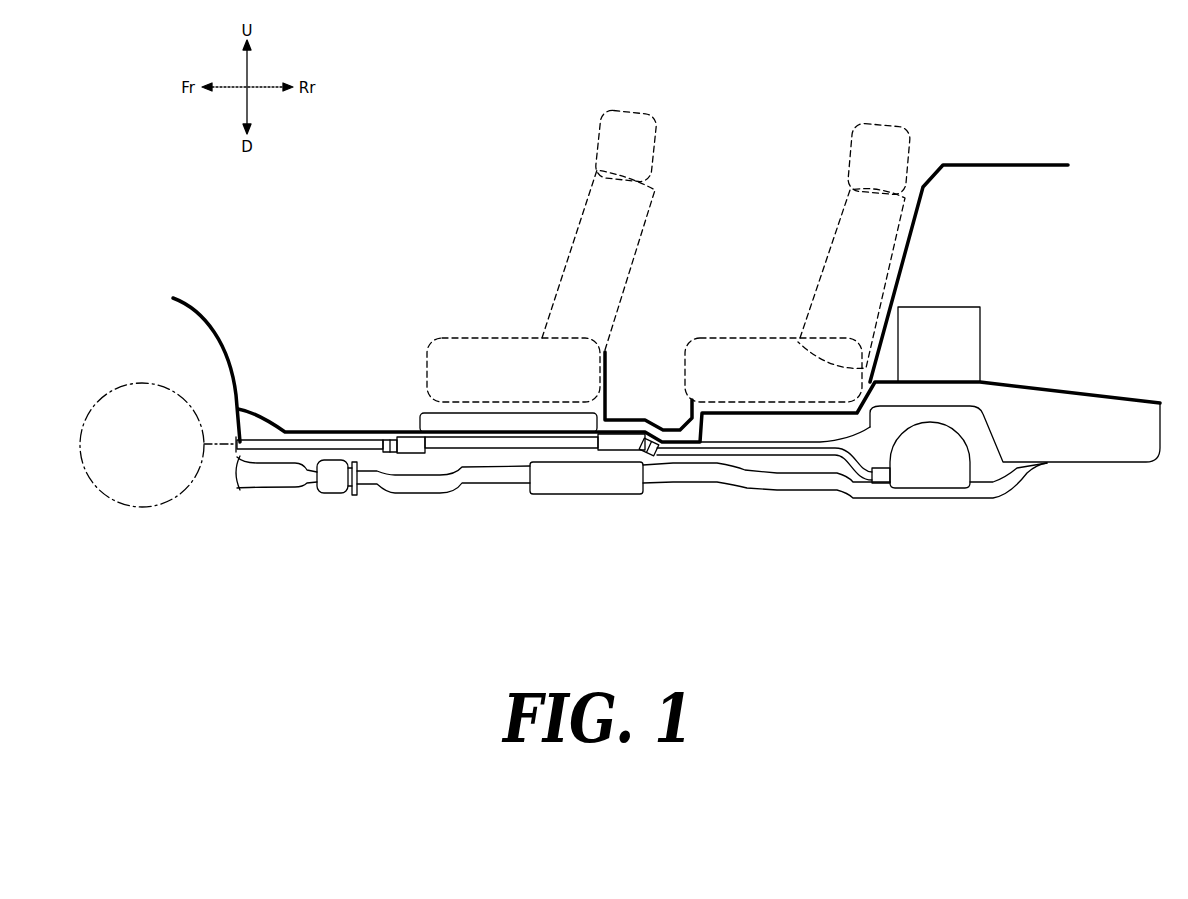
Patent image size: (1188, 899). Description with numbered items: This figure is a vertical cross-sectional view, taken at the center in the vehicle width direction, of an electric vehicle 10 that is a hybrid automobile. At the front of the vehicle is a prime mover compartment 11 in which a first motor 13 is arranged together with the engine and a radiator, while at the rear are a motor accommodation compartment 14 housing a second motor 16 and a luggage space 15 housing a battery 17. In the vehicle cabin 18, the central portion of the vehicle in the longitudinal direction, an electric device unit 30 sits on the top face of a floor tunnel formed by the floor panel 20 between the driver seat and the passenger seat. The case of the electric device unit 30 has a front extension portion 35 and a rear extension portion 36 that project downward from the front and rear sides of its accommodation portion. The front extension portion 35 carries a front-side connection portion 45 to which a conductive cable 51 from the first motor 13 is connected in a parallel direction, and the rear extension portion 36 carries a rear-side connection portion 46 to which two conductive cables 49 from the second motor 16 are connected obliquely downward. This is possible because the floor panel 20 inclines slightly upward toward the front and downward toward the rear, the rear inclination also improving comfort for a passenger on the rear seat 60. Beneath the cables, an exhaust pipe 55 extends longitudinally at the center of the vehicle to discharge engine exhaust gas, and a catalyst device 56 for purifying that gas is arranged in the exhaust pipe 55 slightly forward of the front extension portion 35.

The electric vehicle 10 is at (799, 86).
The prime mover compartment 11 is at (135, 338).
The first motor 13 is at (140, 480).
The motor accommodation compartment 14 is at (985, 460).
The luggage space 15 is at (1007, 260).
The second motor 16 is at (925, 476).
The battery 17 is at (937, 320).
The vehicle cabin 18 is at (465, 212).
The floor panel 20 is at (482, 443).
The electric device unit 30 is at (420, 405).
The front extension portion 35 is at (410, 445).
The rear extension portion 36 is at (622, 444).
The front-side connection portion 45 is at (390, 452).
The rear-side connection portion 46 is at (648, 453).
The conductive cables 49 is at (717, 463).
The conductive cable 51 is at (273, 446).
The exhaust pipe 55 is at (513, 478).
The catalyst device 56 is at (332, 482).
The rear seat 60 is at (845, 258).